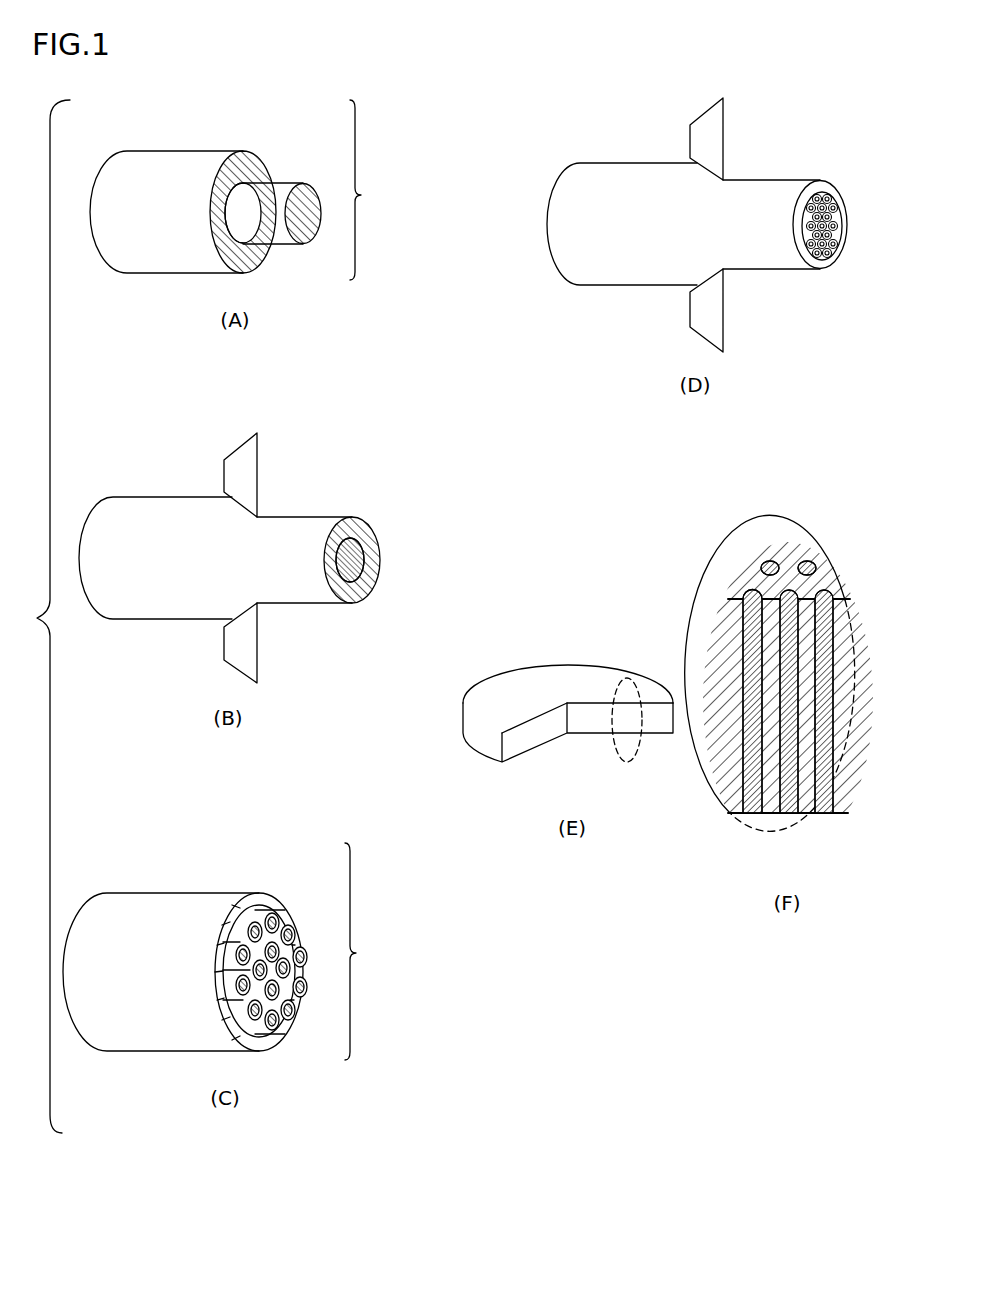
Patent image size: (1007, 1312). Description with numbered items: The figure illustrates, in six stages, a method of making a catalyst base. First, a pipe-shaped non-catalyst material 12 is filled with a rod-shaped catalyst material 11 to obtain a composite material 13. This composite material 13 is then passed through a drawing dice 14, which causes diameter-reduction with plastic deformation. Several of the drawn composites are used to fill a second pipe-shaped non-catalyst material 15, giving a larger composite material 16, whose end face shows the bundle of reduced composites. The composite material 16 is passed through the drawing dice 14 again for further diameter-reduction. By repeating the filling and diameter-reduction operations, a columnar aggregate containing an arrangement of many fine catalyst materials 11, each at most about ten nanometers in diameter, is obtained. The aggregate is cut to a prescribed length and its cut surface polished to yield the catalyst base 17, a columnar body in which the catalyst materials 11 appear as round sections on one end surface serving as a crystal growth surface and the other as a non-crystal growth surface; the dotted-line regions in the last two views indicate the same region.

The catalyst material 11 is at (280, 190).
The non-catalyst material 12 is at (150, 163).
The composite material 13 is at (258, 910).
The drawing dice 14 is at (245, 474).
The non-catalyst material 15 is at (136, 905).
The composite material 16 is at (609, 143).
The catalyst base 17 is at (511, 683).